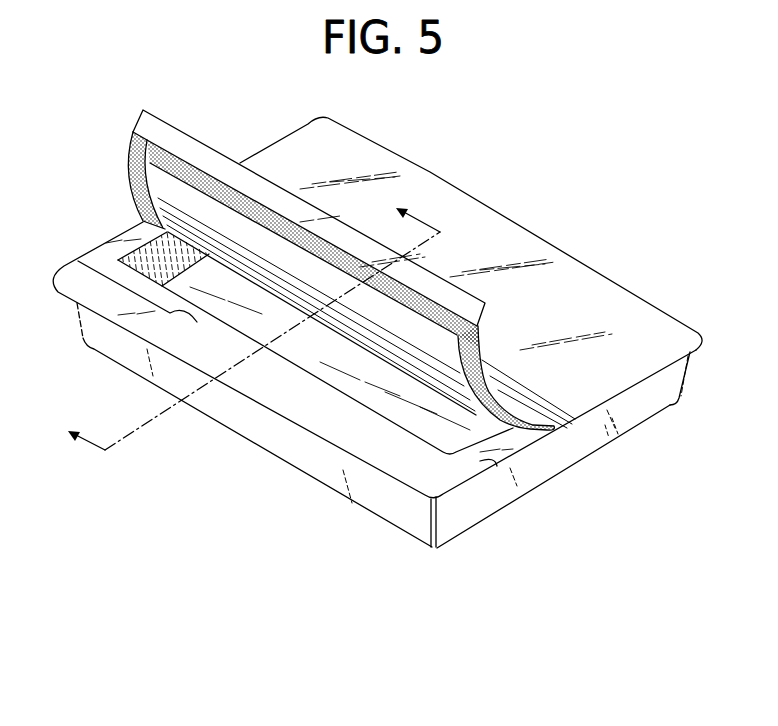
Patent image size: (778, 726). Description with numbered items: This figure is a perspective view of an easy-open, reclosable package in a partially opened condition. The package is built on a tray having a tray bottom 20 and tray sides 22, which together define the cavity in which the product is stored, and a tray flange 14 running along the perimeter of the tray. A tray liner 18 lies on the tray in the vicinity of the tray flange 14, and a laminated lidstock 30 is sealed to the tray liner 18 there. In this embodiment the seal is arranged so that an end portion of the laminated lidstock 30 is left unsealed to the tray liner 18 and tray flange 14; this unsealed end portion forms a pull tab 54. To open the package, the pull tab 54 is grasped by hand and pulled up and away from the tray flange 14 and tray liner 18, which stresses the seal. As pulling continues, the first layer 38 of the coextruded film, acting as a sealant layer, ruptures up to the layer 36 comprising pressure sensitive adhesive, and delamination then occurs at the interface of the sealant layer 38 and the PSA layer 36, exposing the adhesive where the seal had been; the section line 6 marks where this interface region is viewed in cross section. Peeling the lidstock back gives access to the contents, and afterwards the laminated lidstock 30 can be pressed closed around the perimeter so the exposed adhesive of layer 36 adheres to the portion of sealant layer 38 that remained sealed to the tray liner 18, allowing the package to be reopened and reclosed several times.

The tray flange 14 is at (364, 390).
The tray liner 18 is at (68, 282).
The tray bottom 20 is at (548, 483).
The tray sides 22 is at (572, 448).
The laminated lidstock 30 is at (377, 163).
The PSA layer 36 is at (128, 180).
The first layer (sealant layer) 38 is at (170, 313).
The pull tab 54 is at (228, 172).
The section line 6- 6 is at (264, 342).